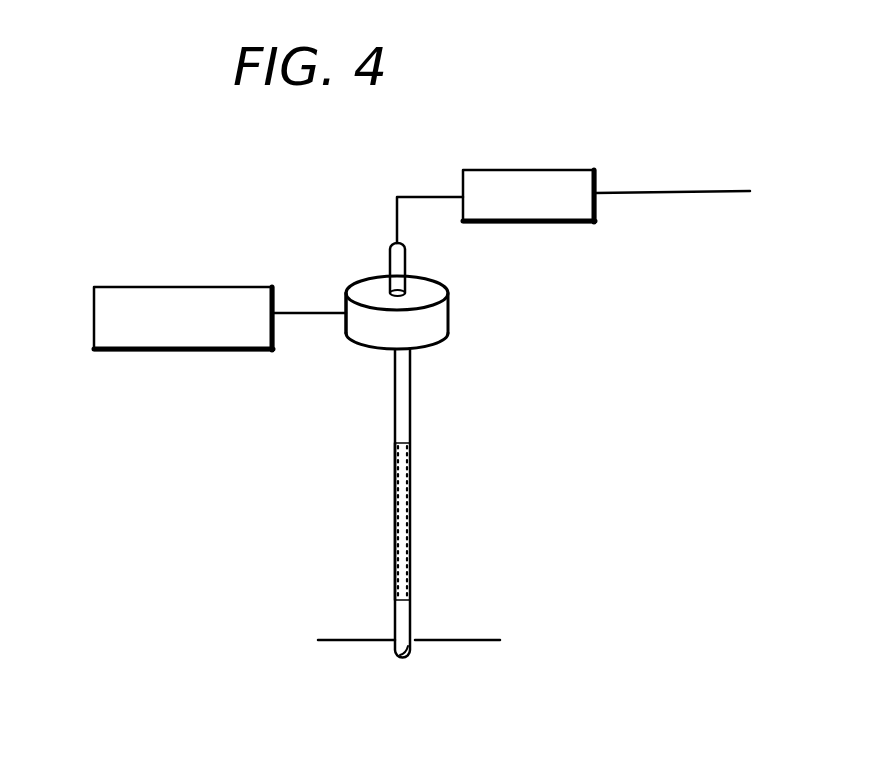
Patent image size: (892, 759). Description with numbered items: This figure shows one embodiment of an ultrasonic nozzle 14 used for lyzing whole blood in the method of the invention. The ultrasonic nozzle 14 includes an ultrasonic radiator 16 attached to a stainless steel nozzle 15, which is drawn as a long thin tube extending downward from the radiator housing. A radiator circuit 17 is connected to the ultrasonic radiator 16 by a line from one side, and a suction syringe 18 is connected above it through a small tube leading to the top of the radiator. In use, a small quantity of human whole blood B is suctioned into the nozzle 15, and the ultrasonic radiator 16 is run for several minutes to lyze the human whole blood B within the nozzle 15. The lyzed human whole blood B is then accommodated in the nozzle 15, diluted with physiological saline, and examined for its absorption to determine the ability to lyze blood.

The ultrasonic nozzle 14 is at (450, 357).
The stainless steel nozzle 15 is at (412, 540).
The ultrasonic radiator 16 is at (448, 305).
The radiator circuit 17 is at (165, 287).
The suction syringe 18 is at (527, 170).
The human whole blood B is at (395, 500).